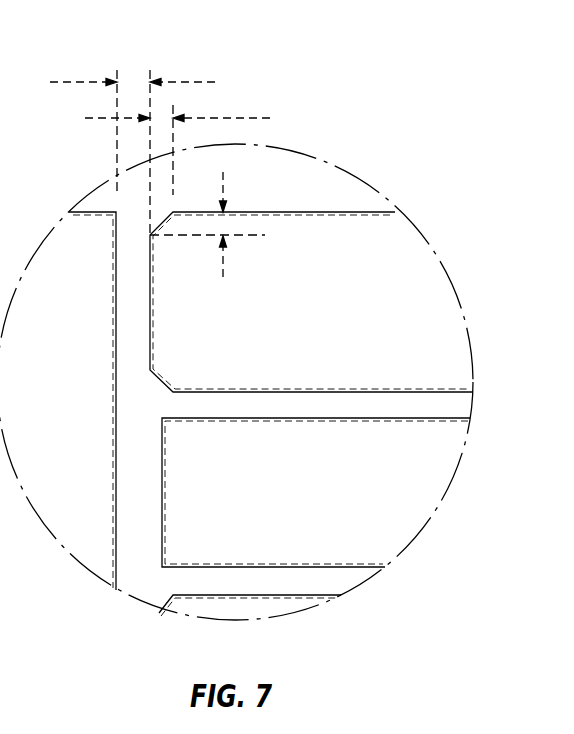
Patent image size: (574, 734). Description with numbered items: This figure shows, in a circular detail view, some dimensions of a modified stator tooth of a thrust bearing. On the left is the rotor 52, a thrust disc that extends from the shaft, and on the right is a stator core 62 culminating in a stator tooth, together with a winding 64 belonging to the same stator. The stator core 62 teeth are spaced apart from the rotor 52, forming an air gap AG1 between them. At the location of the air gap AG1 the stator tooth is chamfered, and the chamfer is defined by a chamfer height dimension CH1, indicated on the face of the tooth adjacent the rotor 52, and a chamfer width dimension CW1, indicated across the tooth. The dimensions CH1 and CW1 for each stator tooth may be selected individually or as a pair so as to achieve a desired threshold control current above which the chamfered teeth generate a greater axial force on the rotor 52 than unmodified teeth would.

The rotor 52 is at (73, 408).
The stator core 62 is at (375, 352).
The winding 64 is at (377, 513).
The air gap AG1 is at (83, 82).
The chamfer width dimension CW1 is at (245, 118).
The chamfer height dimension CH1 is at (222, 256).